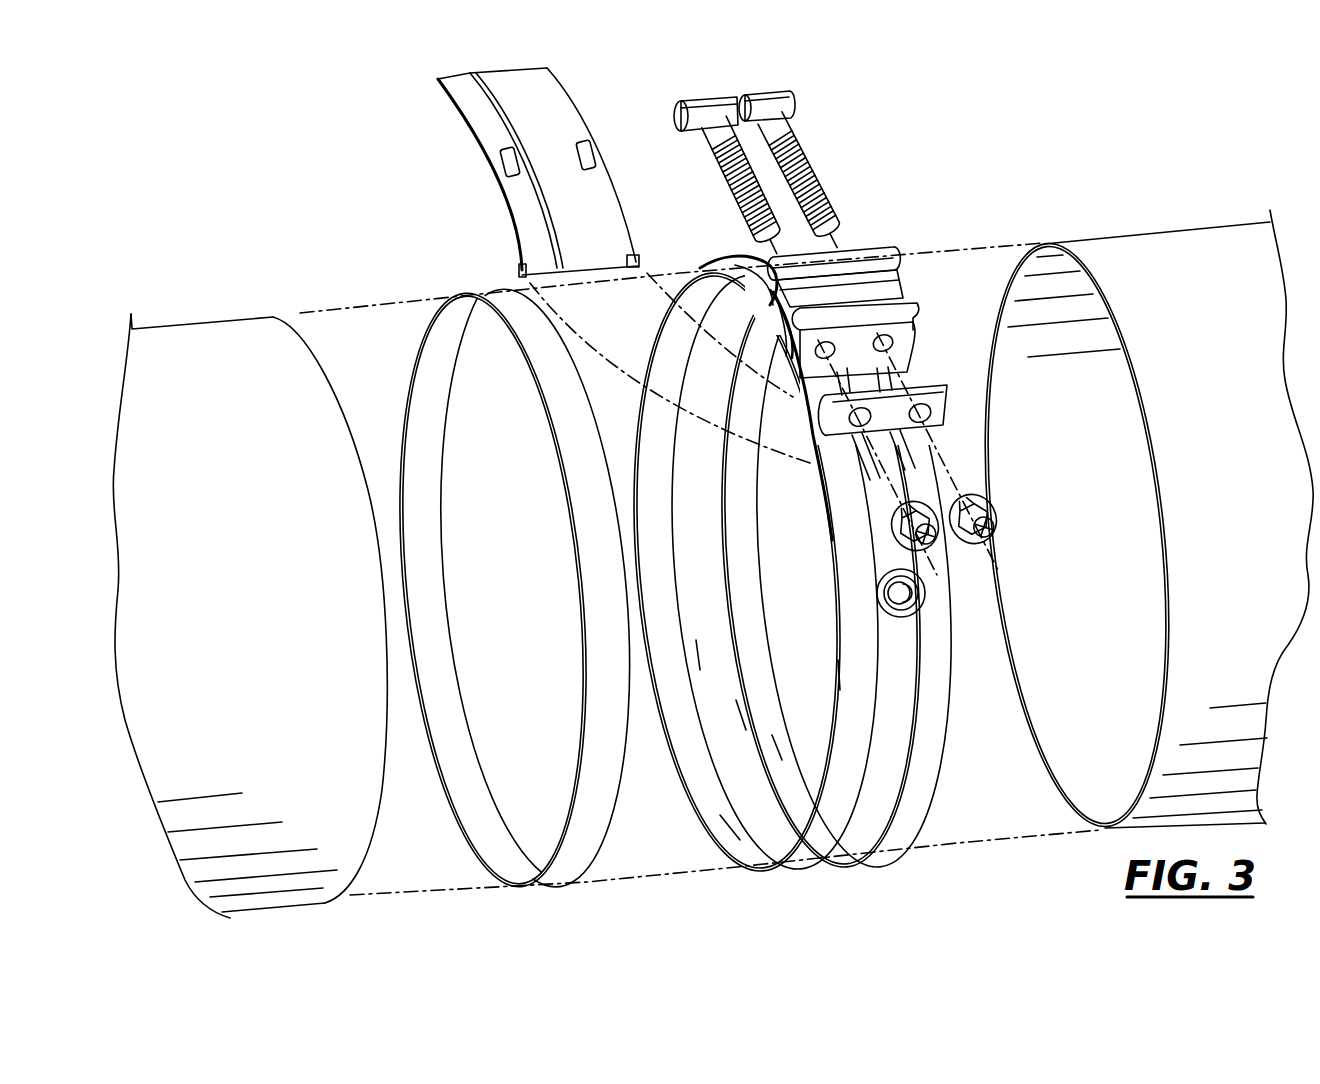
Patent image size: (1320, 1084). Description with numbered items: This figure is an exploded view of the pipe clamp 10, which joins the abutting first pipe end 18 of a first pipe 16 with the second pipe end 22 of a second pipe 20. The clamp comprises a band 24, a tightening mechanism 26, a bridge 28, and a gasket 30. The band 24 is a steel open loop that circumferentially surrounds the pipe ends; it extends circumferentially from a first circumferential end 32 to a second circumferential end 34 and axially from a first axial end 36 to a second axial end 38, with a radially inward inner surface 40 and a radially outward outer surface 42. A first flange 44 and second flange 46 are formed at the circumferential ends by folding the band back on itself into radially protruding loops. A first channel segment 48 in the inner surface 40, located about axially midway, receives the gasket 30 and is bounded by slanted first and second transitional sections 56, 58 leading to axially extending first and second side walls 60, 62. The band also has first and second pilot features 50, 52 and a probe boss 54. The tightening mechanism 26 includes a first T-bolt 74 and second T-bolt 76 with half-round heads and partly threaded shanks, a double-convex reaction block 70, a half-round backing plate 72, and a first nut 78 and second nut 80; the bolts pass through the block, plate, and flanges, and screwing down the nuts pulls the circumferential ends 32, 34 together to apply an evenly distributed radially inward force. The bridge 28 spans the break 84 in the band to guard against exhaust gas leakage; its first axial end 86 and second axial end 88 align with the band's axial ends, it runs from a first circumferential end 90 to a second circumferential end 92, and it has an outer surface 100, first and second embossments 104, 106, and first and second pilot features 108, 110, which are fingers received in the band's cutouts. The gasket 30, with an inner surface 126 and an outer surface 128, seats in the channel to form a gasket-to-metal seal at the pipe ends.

The pipe clamp 10 is at (280, 174).
The first pipe 16 is at (1165, 250).
The first pipe end 18 is at (1152, 485).
The second pipe 20 is at (208, 355).
The second pipe end 22 is at (376, 530).
The band 24 is at (830, 630).
The tightening mechanism 26 is at (825, 154).
The bridge 28 is at (476, 137).
The gasket 30 is at (556, 461).
The first circumferential end 32 is at (893, 378).
The second circumferential end 34 is at (757, 262).
The first axial end 36 is at (947, 723).
The second axial end 38 is at (837, 674).
The inner surface 40 is at (705, 785).
The outer surface 42 is at (917, 787).
The first flange 44 is at (913, 312).
The second flange 46 is at (873, 253).
The first channel segment 48 is at (730, 740).
The first pilot feature 50 is at (933, 460).
The second pilot feature 52 is at (820, 478).
The probe boss 54 is at (923, 602).
The first transitional section 56 is at (745, 718).
The second transitional section 58 is at (693, 660).
The first side wall 60 is at (783, 747).
The second side wall 62 is at (730, 825).
The reaction block 70 is at (880, 285).
The backing plate 72 is at (928, 398).
The first T-bolt 74 is at (783, 125).
The second T-bolt 76 is at (708, 137).
The first nut 78 is at (975, 497).
The second nut 80 is at (893, 512).
The break 84 is at (787, 350).
The first axial end 86 is at (622, 218).
The second axial end 88 is at (497, 200).
The first circumferential end 90 is at (582, 275).
The second circumferential end 92 is at (497, 66).
The outer surface 100 is at (523, 117).
The first embossment 104 is at (583, 140).
The second embossment 106 is at (510, 157).
The first pilot feature 108 is at (638, 260).
The second pilot feature 110 is at (521, 273).
The inner surface 126 is at (450, 720).
The outer surface 128 is at (607, 673).